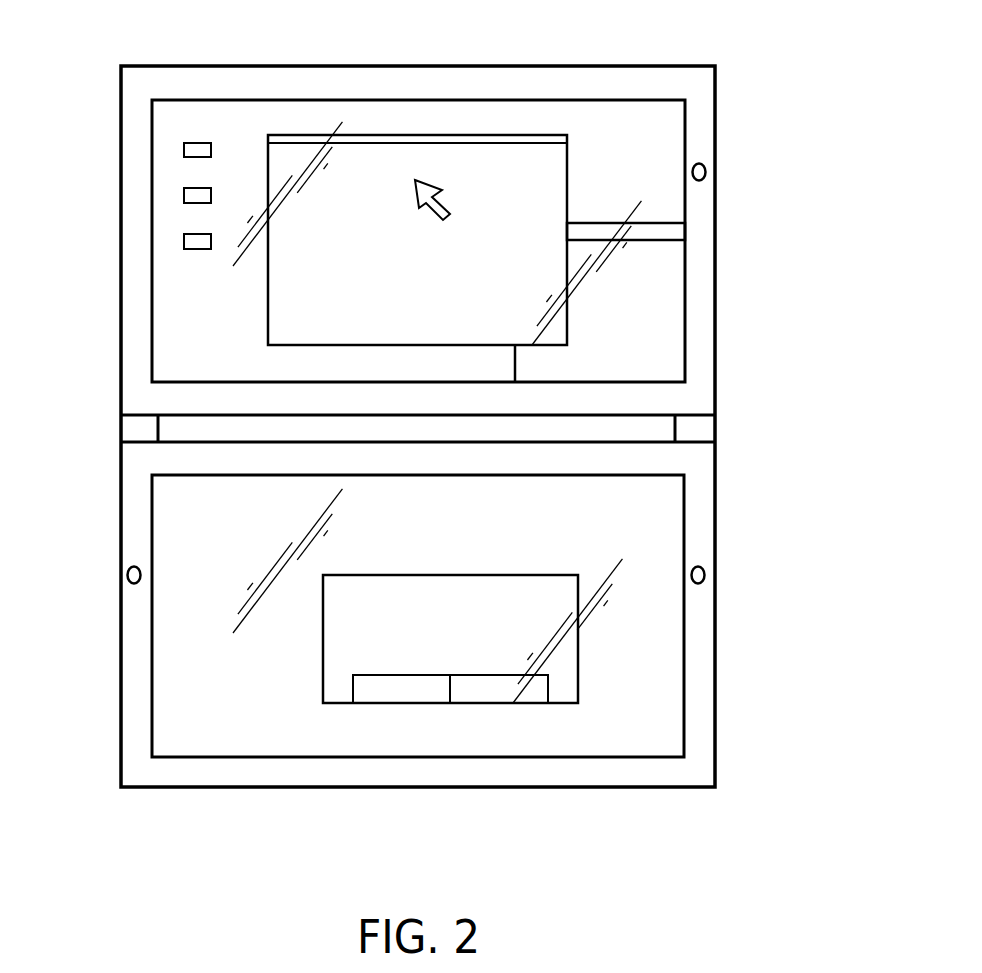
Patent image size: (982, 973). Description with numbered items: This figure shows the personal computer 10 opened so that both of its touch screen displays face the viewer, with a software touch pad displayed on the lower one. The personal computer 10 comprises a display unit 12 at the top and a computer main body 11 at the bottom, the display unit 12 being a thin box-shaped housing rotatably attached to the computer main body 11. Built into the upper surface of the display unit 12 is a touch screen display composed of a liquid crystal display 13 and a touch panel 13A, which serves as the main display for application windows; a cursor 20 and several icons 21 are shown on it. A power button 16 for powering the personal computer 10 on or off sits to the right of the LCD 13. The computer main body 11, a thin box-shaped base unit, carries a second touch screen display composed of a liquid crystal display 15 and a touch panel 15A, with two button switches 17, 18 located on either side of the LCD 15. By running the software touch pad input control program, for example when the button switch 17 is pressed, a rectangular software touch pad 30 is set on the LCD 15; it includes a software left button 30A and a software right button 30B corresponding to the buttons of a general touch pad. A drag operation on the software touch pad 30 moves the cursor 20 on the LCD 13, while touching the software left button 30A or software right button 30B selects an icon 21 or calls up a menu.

The personal computer 10 is at (440, 432).
The computer main body 11 is at (438, 656).
The display unit 12 is at (440, 234).
The liquid crystal display 13 is at (489, 241).
The touch panel 13A is at (670, 131).
The liquid crystal display 15 is at (487, 616).
The touch panel 15A is at (667, 517).
The power button 16 is at (706, 170).
The button switch 17 is at (128, 578).
The button switch 18 is at (705, 574).
The cursor 20 is at (432, 183).
The icon 21 is at (184, 151).
The software touch pad 30 is at (481, 706).
The software left button 30A is at (392, 693).
The software right button 30B is at (497, 693).